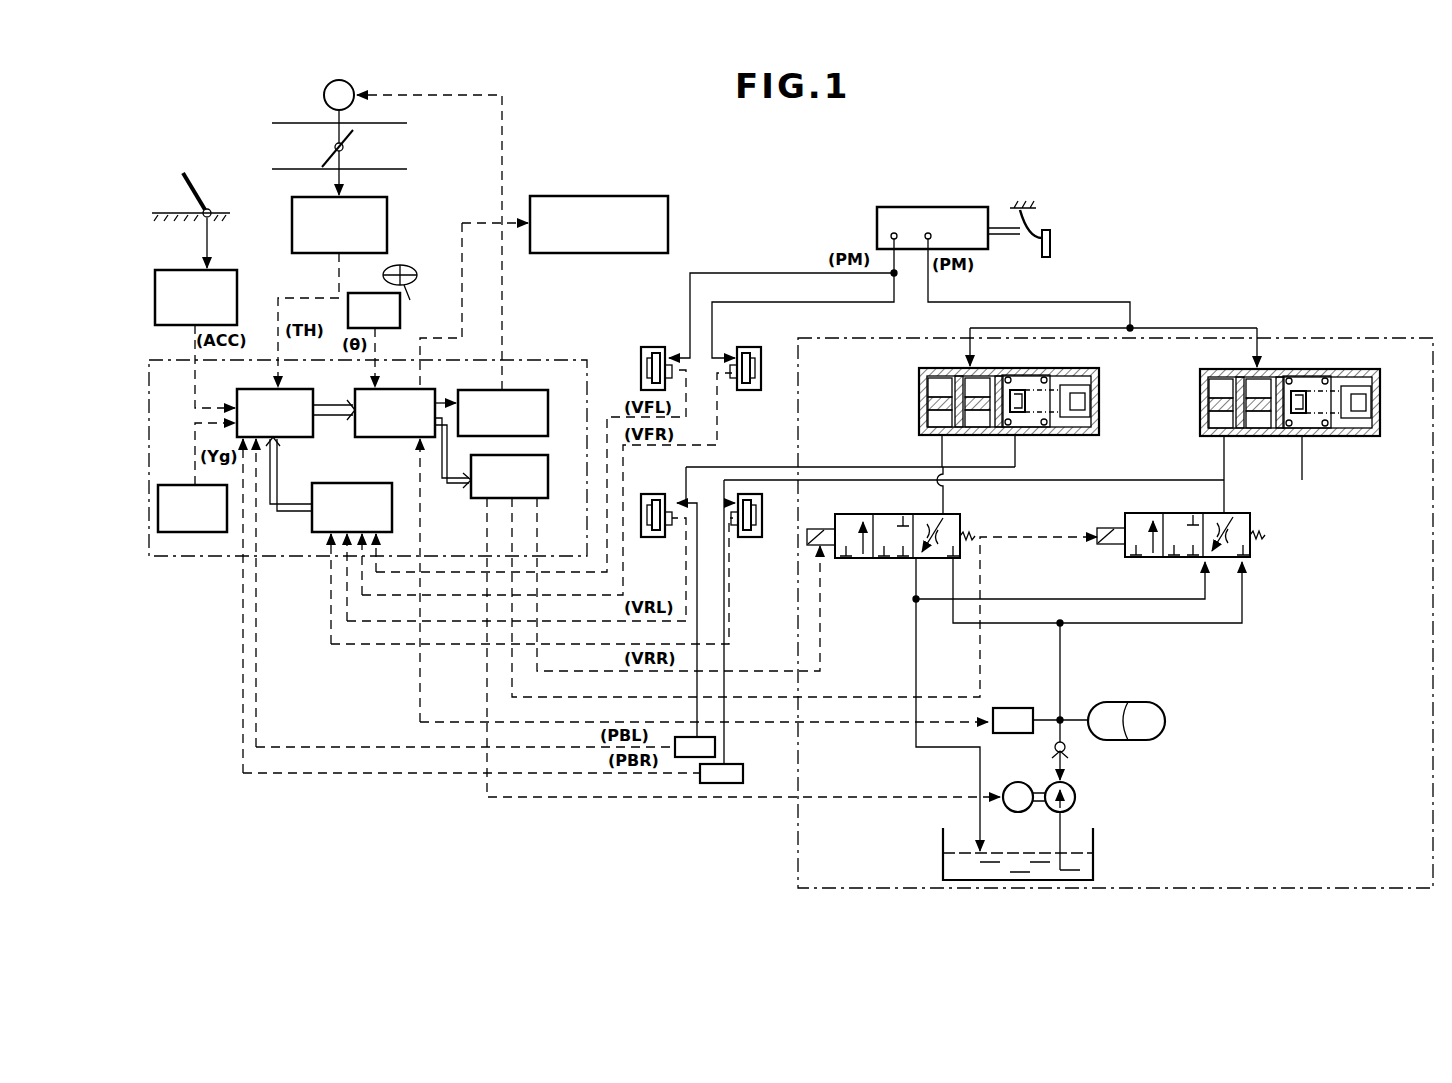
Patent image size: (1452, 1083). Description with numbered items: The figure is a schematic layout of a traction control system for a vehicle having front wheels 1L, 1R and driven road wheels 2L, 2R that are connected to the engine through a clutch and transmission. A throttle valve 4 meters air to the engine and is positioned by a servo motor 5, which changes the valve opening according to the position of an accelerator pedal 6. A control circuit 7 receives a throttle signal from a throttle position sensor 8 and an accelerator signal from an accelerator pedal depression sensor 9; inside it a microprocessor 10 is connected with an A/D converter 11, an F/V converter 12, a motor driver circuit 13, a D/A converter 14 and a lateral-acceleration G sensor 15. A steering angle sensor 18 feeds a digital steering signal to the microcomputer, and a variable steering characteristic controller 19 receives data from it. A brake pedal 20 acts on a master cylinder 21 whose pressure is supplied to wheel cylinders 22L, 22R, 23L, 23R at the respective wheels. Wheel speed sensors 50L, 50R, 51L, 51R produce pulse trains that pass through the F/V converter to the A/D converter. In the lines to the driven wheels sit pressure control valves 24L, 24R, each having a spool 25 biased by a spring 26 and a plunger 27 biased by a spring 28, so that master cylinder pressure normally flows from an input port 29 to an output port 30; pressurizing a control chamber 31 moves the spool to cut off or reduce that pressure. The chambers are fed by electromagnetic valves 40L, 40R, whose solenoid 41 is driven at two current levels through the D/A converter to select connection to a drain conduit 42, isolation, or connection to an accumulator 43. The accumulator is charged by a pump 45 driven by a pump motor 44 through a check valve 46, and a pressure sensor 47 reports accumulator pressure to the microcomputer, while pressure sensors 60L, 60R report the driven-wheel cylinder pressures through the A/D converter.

The throttle valve 4 is at (346, 149).
The servo motor 5 is at (325, 90).
The accelerator pedal 6 is at (203, 195).
The control circuit 7 is at (190, 556).
The throttle position sensor 8 is at (387, 222).
The accelerator pedal depression sensor 9 is at (237, 280).
The microprocessor 10 is at (435, 392).
The A/D converter 11 is at (314, 392).
The F/V converter 12 is at (372, 483).
The motor driver circuit 13 is at (548, 393).
The D/A converter 14 is at (548, 480).
The G sensor 15 is at (172, 485).
The steering angle sensor 18 is at (400, 311).
The variable steering characteristic controller 19 is at (630, 196).
The brake pedal 20 is at (1051, 244).
The master cylinder 21 is at (956, 207).
The vehicle wheel 1L is at (652, 347).
The vehicle wheel 1R is at (748, 347).
The driven road wheel 2L is at (652, 494).
The driven road wheel 2R is at (762, 498).
The wheel cylinder 22L is at (641, 372).
The wheel cylinder 22R is at (762, 373).
The wheel cylinder 23L is at (642, 530).
The wheel cylinder 23R is at (762, 525).
The wheel speed sensor 50L is at (688, 352).
The wheel speed sensor 50R is at (733, 385).
The wheel speed sensor 51L is at (666, 525).
The wheel speed sensor 51R is at (736, 540).
The pressure control valve 24L is at (1082, 447).
The pressure control valve 24R is at (1331, 448).
The spool 25 is at (922, 398).
The spring 26 is at (1052, 374).
The plunger 27 is at (1060, 406).
The spring 28 is at (1038, 430).
The input port 29 is at (972, 373).
The output port 30 is at (1012, 436).
The control chamber 31 is at (928, 418).
The electromagnetic valve 40L is at (962, 520).
The electromagnetic valve 40R is at (1255, 555).
The solenoid 41 is at (812, 529).
The drain conduit 42 is at (916, 740).
The accumulator 43 is at (1166, 721).
The pump motor 44 is at (1018, 782).
The pump 45 is at (1076, 797).
The check valve 46 is at (1068, 750).
The pressure sensor 47 is at (1012, 708).
The pressure sensor 60L is at (715, 747).
The pressure sensor 60R is at (722, 783).